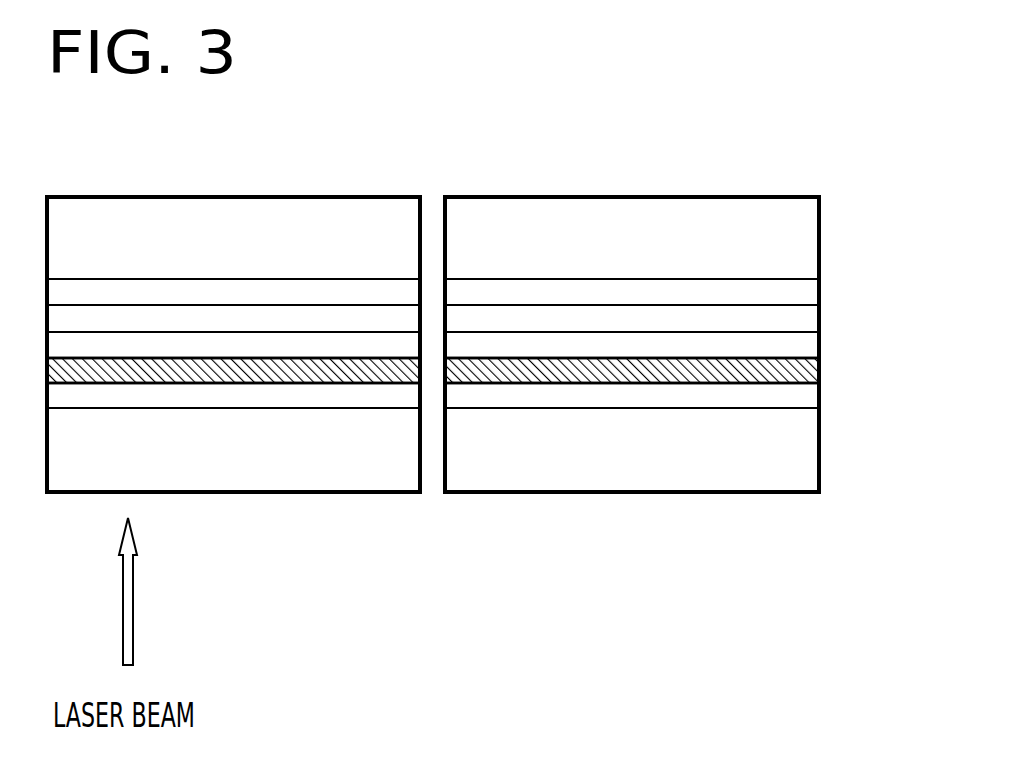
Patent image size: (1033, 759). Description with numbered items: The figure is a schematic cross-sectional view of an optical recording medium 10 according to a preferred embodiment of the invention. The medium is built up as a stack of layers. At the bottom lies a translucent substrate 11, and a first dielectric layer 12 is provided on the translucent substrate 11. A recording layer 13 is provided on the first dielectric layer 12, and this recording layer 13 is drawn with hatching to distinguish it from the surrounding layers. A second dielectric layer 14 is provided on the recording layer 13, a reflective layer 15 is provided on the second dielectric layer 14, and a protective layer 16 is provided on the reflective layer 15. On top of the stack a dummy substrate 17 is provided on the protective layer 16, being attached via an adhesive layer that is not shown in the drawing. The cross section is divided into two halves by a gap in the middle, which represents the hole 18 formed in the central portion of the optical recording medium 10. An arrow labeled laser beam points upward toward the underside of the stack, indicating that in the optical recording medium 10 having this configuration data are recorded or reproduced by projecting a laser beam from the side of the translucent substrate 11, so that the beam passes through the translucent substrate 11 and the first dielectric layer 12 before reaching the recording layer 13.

The optical recording medium 10 is at (651, 128).
The translucent substrate 11 is at (820, 454).
The first dielectric layer 12 is at (820, 399).
The recording layer 13 is at (820, 374).
The second dielectric layer 14 is at (820, 348).
The reflective layer 15 is at (820, 323).
The protective layer 16 is at (820, 298).
The dummy substrate 17 is at (820, 242).
The hole 18 is at (430, 503).